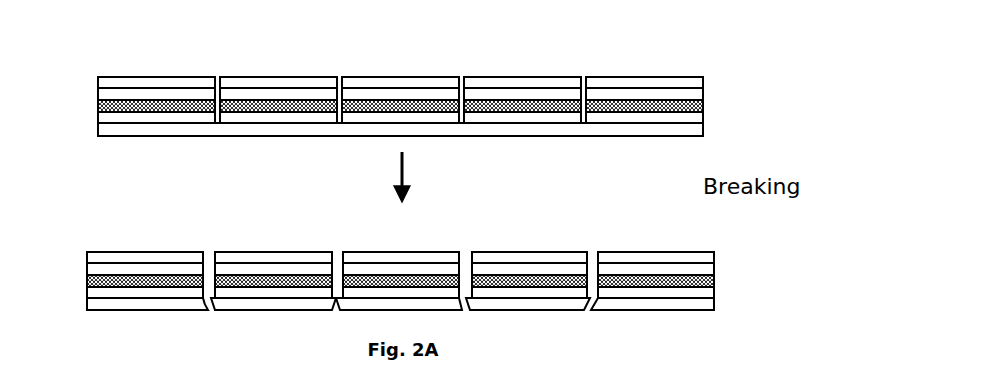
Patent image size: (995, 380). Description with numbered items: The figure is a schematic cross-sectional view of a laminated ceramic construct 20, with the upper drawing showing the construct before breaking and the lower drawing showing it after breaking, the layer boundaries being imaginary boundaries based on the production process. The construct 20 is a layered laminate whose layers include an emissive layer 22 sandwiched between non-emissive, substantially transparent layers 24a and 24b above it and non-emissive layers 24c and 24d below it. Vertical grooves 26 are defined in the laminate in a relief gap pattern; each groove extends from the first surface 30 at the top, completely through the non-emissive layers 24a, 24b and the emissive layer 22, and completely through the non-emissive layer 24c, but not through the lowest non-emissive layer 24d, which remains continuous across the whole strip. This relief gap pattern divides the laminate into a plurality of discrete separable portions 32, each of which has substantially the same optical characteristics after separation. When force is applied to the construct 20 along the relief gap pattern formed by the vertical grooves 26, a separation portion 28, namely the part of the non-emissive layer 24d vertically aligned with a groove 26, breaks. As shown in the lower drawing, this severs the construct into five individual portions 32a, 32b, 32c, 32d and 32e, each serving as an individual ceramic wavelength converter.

The laminated ceramic construct 20 is at (710, 102).
The emissive layer 22 is at (106, 107).
The non-emissive, substantially transparent layer 24a is at (117, 83).
The non-emissive, substantially transparent layer 24b is at (108, 90).
The non-emissive layer 24c is at (103, 118).
The non-emissive layer 24d is at (108, 132).
The vertical groove 26 is at (217, 77).
The separation portion 28 is at (583, 125).
The first surface 30 is at (645, 77).
The discrete separable portion 32 is at (343, 70).
The individual portion 32a is at (140, 252).
The individual portion 32b is at (270, 252).
The individual portion 32c is at (397, 252).
The individual portion 32d is at (528, 252).
The individual portion 32e is at (655, 252).